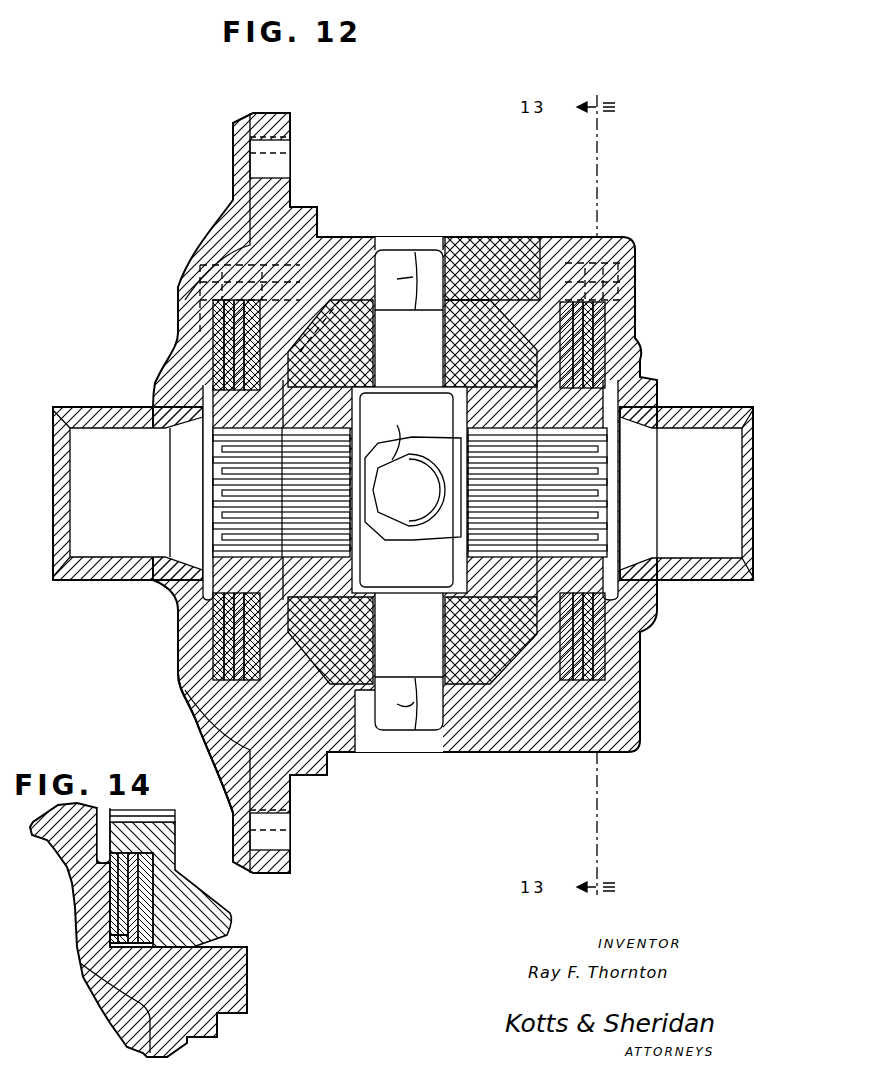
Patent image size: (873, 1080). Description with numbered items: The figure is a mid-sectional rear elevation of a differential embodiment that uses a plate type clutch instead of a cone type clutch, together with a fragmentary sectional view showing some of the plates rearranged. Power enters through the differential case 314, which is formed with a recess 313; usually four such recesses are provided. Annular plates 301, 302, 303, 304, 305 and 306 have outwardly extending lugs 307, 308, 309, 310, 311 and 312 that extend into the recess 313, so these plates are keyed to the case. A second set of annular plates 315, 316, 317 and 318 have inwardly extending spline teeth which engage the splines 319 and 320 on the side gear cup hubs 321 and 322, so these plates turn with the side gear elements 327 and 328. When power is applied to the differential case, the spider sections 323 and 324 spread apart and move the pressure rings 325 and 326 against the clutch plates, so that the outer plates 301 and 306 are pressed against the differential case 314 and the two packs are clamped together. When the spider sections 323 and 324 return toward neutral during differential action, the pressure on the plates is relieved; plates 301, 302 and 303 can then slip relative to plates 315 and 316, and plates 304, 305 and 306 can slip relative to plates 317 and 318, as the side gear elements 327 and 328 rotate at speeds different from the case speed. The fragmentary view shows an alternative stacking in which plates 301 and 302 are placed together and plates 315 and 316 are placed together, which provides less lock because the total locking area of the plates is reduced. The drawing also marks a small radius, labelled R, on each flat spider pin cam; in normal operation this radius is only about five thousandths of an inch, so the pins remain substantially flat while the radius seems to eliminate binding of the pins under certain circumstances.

In FIG. 12, the annular plate 301 is at (217, 333).
In FIG. 14, the annular plate 301 is at (112, 883).
In FIG. 12, the annular plate 302 is at (237, 345).
In FIG. 14, the annular plate 302 is at (128, 900).
In FIG. 12, the annular plate 303 is at (253, 358).
In FIG. 14, the annular plate 303 is at (148, 897).
In FIG. 12, the annular plate 304 is at (567, 320).
In FIG. 12, the annular plate 305 is at (585, 343).
In FIG. 12, the annular plate 306 is at (600, 363).
In FIG. 12, the outwardly extending lug 307 is at (178, 285).
In FIG. 12, the outwardly extending lug 308 is at (200, 270).
In FIG. 12, the outwardly extending lug 309 is at (208, 257).
In FIG. 12, the outwardly extending lug 310 is at (638, 237).
In FIG. 12, the outwardly extending lug 311 is at (617, 232).
In FIG. 12, the outwardly extending lug 312 is at (600, 232).
In FIG. 12, the recess 313 is at (338, 298).
In FIG. 12, the differential case 314 is at (478, 233).
In FIG. 12, the annular plate 315 is at (223, 635).
In FIG. 14, the annular plate 315 is at (110, 923).
In FIG. 12, the annular plate 316 is at (240, 655).
In FIG. 14, the annular plate 316 is at (110, 940).
In FIG. 12, the annular plate 317 is at (593, 637).
In FIG. 12, the annular plate 318 is at (603, 658).
In FIG. 12, the splines 319 is at (200, 378).
In FIG. 12, the splines 320 is at (603, 387).
In FIG. 12, the side gear cup hub 321 is at (227, 412).
In FIG. 12, the side gear cup hub 322 is at (597, 410).
In FIG. 12, the spider section 323 is at (388, 248).
In FIG. 12, the spider section 324 is at (437, 548).
In FIG. 12, the pressure ring 325 is at (193, 722).
In FIG. 12, the pressure ring 326 is at (530, 670).
In FIG. 12, the side gear element 327 is at (330, 297).
In FIG. 12, the side gear element 328 is at (508, 383).